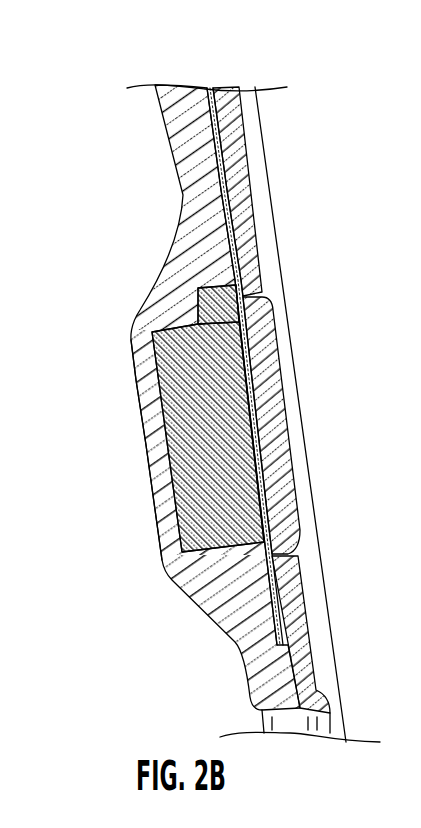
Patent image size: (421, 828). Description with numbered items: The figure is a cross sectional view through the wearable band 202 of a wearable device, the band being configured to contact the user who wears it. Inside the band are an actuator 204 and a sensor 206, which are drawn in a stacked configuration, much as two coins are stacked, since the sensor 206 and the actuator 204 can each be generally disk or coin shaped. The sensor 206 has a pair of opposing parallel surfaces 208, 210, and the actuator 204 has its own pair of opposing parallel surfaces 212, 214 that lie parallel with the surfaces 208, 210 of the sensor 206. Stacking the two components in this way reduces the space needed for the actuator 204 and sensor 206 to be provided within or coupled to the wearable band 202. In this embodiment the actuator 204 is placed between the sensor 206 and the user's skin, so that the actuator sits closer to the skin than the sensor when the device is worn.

The wearable band 202 is at (180, 178).
The actuator 204 is at (183, 407).
The sensor 206 is at (273, 407).
The opposing parallel surface of the sensor 208 is at (236, 325).
The opposing parallel surface of the sensor 210 is at (277, 338).
The opposing parallel surface of the actuator 212 is at (265, 508).
The opposing parallel surface of the actuator 214 is at (175, 512).